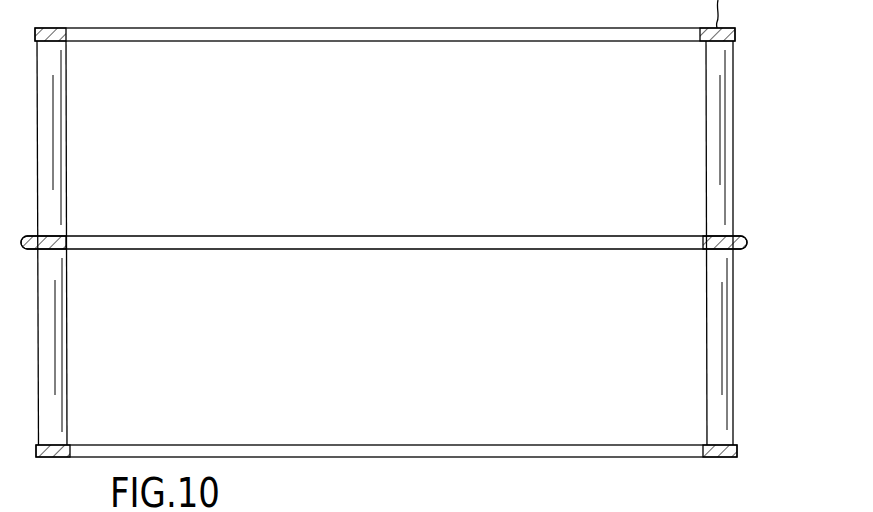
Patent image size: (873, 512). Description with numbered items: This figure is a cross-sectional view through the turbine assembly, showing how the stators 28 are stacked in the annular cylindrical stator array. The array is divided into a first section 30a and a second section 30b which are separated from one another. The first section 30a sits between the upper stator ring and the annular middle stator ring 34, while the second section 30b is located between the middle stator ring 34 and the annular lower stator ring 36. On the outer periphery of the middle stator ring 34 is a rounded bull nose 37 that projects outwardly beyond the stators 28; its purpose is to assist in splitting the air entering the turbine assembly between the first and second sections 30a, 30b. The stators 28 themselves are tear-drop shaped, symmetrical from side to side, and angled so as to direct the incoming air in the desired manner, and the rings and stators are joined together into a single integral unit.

The stator 28 is at (720, 200).
The first section 30a is at (745, 127).
The second section 30b is at (747, 347).
The middle stator ring 34 is at (631, 243).
The lower stator ring 36 is at (718, 457).
The bull nose 37 is at (750, 241).